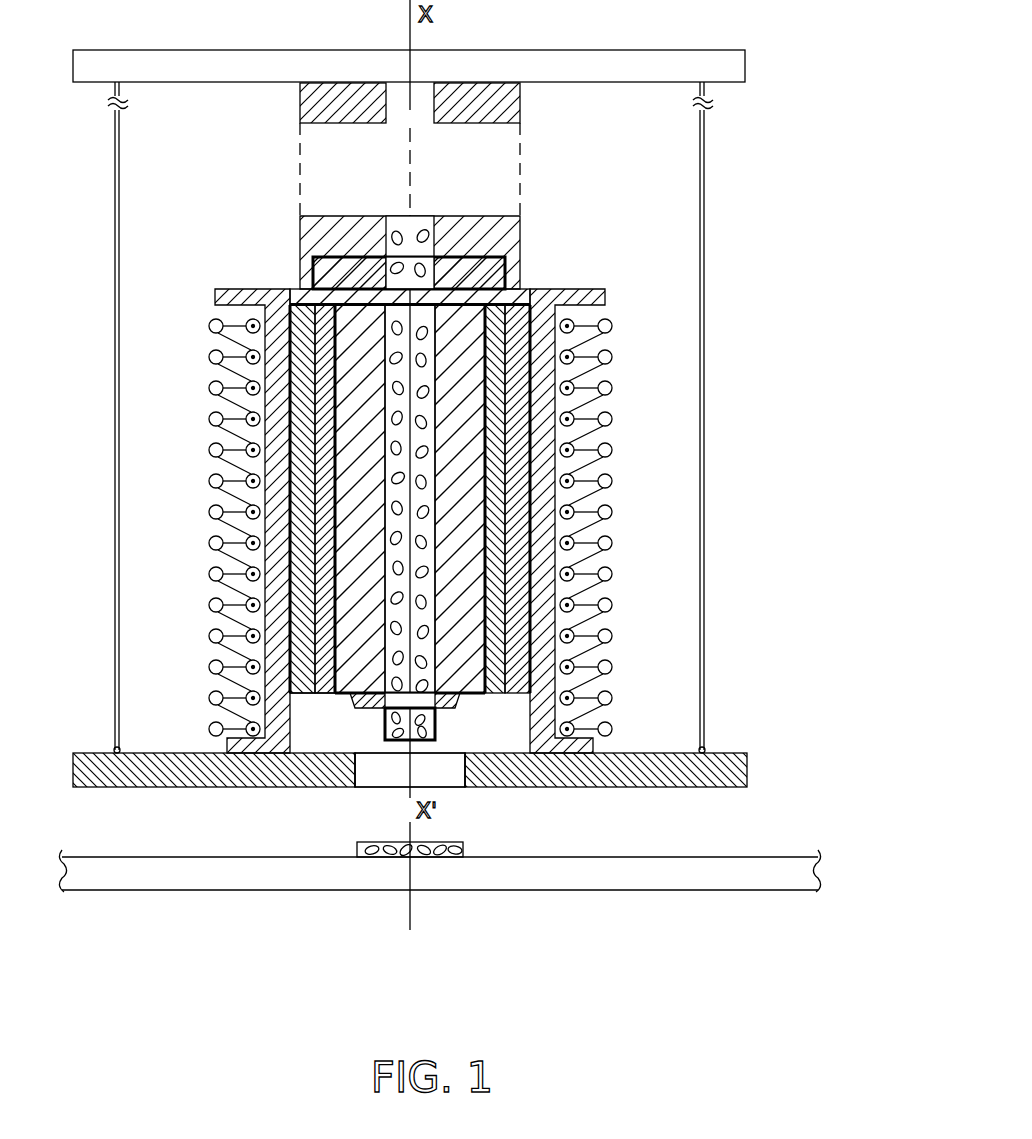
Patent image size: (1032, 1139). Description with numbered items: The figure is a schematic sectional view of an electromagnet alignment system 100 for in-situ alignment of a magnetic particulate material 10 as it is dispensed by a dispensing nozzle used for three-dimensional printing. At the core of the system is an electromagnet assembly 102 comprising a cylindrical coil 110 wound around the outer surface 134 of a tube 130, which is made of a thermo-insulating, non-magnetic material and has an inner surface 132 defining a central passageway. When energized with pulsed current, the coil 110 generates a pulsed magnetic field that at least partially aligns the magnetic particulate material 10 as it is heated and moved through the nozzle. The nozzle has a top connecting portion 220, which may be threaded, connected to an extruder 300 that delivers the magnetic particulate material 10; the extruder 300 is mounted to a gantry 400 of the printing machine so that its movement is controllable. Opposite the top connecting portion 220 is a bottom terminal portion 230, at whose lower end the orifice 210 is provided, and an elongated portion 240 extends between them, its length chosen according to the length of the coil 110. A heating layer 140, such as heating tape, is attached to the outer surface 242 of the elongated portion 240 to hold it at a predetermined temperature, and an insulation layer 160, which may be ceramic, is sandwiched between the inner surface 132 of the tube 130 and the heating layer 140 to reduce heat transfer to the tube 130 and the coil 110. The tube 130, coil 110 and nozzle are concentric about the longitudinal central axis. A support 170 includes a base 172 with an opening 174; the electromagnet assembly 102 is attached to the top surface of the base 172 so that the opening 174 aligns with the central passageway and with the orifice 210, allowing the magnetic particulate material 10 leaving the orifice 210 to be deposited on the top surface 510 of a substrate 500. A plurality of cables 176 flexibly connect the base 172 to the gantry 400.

The magnetic particulate material 10 is at (463, 850).
The electromagnet alignment system 100 is at (200, 483).
The electromagnet assembly 102 is at (140, 333).
The coil 110 is at (216, 393).
The tube 130 is at (252, 383).
The inner surface 132 is at (293, 702).
The outer surface 134 is at (267, 715).
The heating layer 140 is at (333, 320).
The insulation layer 160 is at (290, 300).
The support 170 is at (830, 657).
The base 172 is at (745, 773).
The opening 174 is at (462, 782).
The cables 176 is at (704, 698).
The orifice 210 is at (430, 728).
The top connecting portion 220 is at (505, 280).
The bottom terminal portion 230 is at (392, 712).
The elongated portion 240 is at (458, 622).
The outer surface 242 is at (342, 472).
The extruder 300 is at (522, 94).
The gantry 400 is at (745, 66).
The substrate 500 is at (776, 884).
The top surface 510 is at (681, 857).